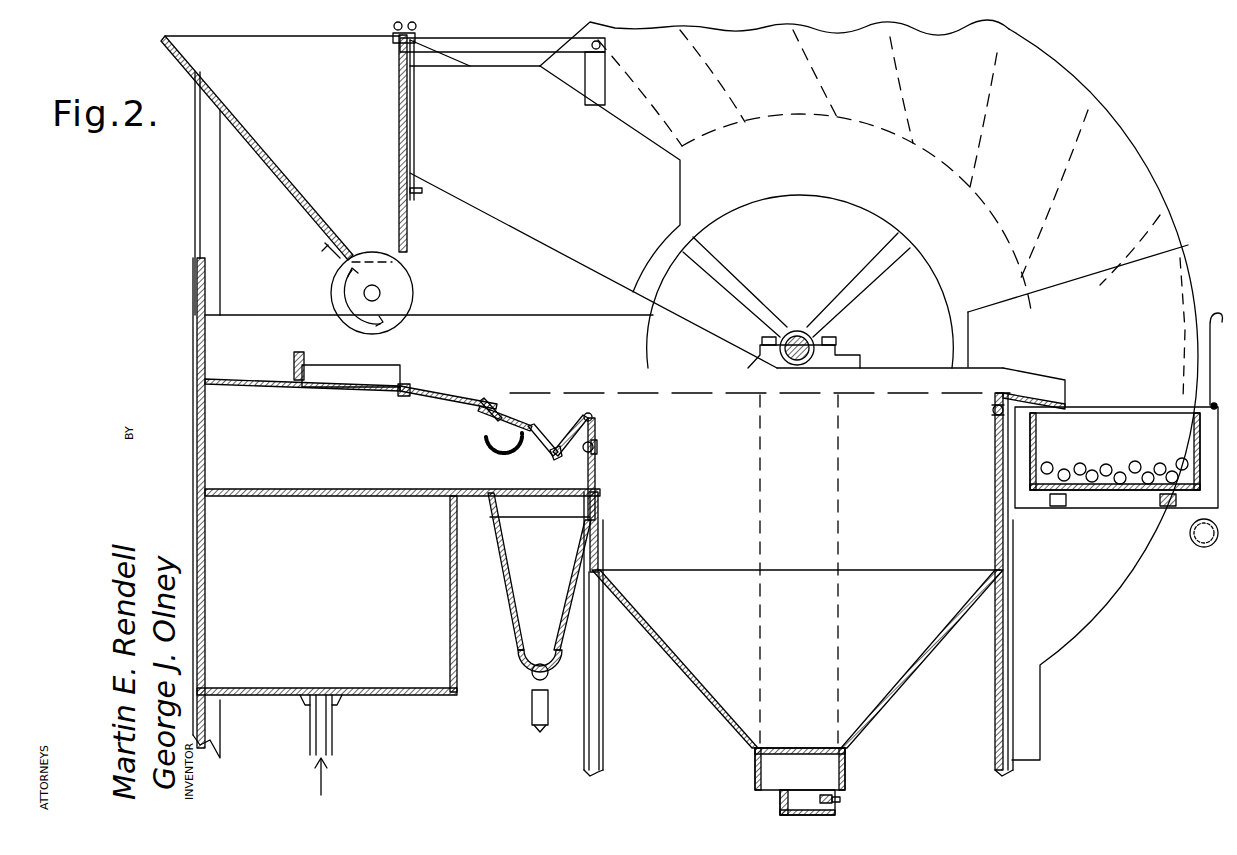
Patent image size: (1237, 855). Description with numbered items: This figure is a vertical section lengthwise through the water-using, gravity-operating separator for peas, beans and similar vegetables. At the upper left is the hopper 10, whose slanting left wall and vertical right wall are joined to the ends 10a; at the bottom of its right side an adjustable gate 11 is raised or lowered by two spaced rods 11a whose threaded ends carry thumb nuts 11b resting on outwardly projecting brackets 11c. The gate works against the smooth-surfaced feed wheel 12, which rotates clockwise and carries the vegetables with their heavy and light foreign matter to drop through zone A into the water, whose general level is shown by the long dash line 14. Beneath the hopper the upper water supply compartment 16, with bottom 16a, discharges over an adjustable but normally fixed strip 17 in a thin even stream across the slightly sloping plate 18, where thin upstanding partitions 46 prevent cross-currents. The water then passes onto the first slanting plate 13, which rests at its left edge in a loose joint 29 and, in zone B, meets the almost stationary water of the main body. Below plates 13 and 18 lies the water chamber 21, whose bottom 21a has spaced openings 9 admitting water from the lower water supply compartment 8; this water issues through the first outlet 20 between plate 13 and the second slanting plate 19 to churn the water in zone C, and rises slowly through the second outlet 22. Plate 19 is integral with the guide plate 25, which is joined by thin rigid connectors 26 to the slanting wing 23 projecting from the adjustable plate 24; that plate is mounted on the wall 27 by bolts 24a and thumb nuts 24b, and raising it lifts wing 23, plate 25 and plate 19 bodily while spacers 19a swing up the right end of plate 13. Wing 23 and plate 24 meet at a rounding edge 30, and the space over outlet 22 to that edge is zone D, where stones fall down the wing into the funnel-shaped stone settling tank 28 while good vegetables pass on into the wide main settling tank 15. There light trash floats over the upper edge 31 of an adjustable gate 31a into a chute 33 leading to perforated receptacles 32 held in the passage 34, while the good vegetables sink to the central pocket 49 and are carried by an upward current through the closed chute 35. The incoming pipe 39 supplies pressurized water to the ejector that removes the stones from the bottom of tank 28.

The lower water supply compartment 8 is at (327, 645).
The spaced openings 9 is at (251, 497).
The hopper 10 is at (317, 175).
The hopper ends 10a is at (325, 136).
The adjustable gate 11 is at (408, 238).
The spaced rods 11a is at (414, 108).
The thumb nuts 11b is at (418, 27).
The brackets 11c is at (502, 71).
The feed wheel 12 is at (330, 287).
The first slanting plate 13 is at (448, 405).
The water level 14 is at (645, 392).
The main settling tank 15 is at (798, 584).
The upper water supply compartment 16 is at (232, 352).
The bottom of compartment 16 16a is at (240, 387).
The adjustable strip 17 is at (296, 360).
The slightly sloping plate 18 is at (356, 388).
The second slanting plate 19 is at (504, 408).
The spacers 19a is at (497, 400).
The first outlet 20 is at (496, 410).
The water chamber 21 is at (240, 465).
The bottom of water chamber 21a is at (212, 498).
The second outlet 22 is at (535, 452).
The slanting wing 23 is at (573, 448).
The adjustable plate 24 is at (598, 438).
The bolts 24a is at (600, 446).
The thumb nuts 24b is at (603, 453).
The guide plate 25 is at (494, 453).
The rigid connectors 26 is at (556, 430).
The wall 27 is at (596, 500).
The stone settling tank 28 is at (530, 525).
The loose joint 29 is at (411, 398).
The rounding edge 30 is at (592, 417).
The upper edge of gate 31 is at (994, 394).
The adjustable gate 31a is at (999, 432).
The receptacles 32 is at (1116, 457).
The chute 33 is at (1040, 396).
The passage 34 is at (1128, 582).
The closed chute 35 is at (808, 672).
The incoming pipe 39 is at (534, 700).
The upstanding partitions 46 is at (342, 349).
The pocket 49 is at (765, 772).
The zone A is at (415, 350).
The zone B is at (462, 396).
The zone C is at (531, 400).
The zone D is at (566, 403).